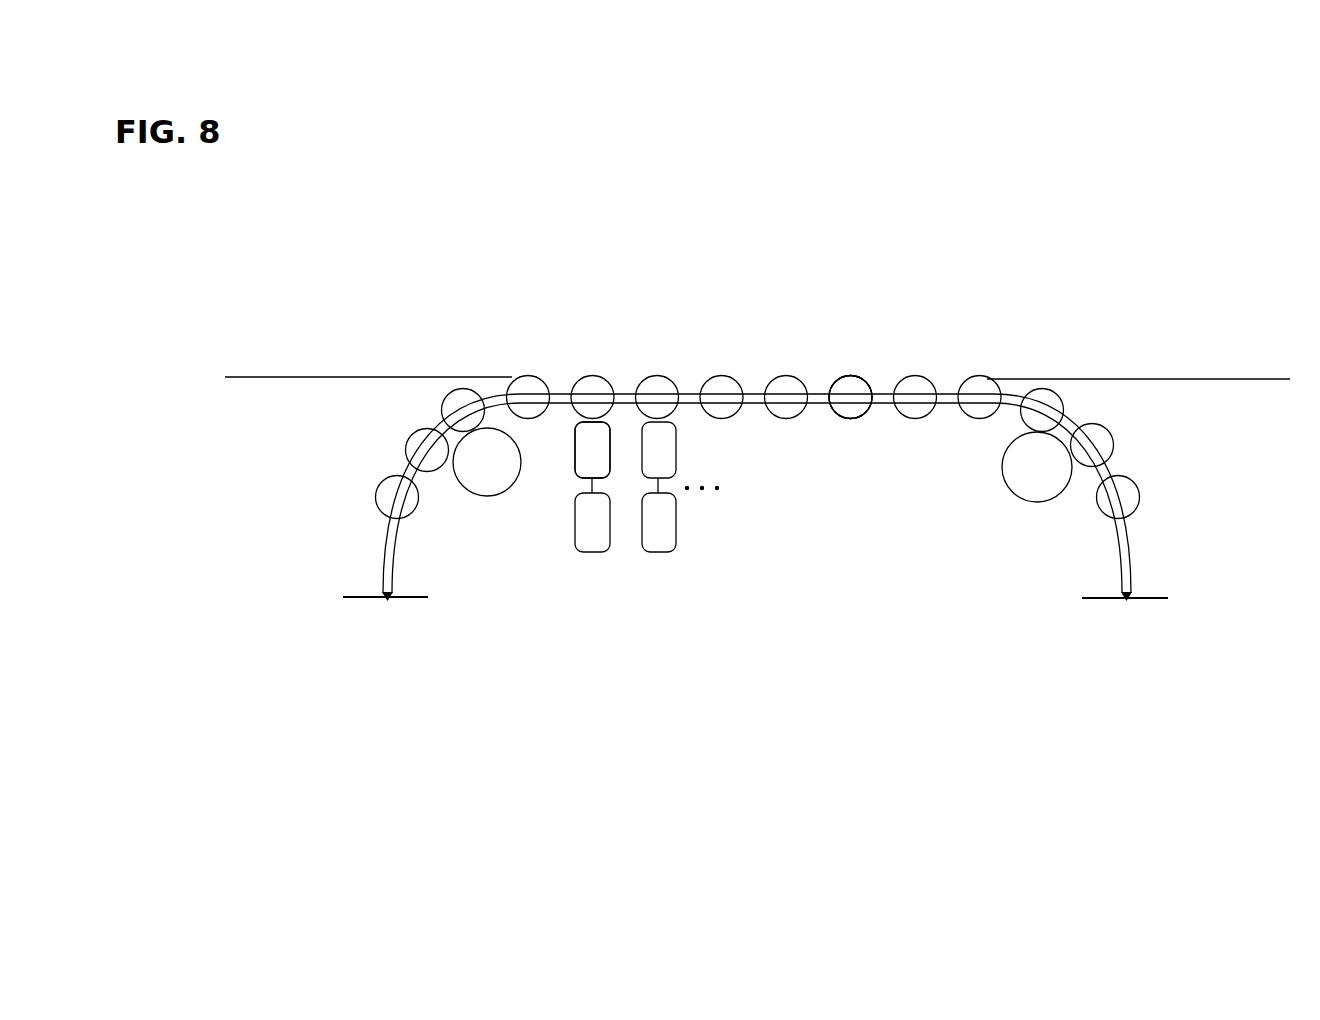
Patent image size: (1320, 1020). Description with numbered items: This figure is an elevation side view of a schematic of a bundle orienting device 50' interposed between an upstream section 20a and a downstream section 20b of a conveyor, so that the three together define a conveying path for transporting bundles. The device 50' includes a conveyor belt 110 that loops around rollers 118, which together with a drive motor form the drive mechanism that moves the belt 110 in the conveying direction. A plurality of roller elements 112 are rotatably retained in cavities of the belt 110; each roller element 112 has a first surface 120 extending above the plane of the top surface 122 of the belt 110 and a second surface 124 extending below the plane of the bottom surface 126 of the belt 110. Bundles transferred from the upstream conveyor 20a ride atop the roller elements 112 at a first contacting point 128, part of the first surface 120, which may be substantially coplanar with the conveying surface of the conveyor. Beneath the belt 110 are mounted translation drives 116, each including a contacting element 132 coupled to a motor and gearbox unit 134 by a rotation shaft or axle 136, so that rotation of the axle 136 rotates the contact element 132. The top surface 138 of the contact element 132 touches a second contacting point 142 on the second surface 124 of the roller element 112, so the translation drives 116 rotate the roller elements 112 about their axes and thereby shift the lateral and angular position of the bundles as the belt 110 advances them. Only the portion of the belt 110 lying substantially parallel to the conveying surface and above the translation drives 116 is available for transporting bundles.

The bundle orienting device 50' is at (757, 430).
The upstream section of the conveyor 20a is at (290, 377).
The downstream section of the conveyor 20b is at (1097, 379).
The conveyor belt 110 is at (559, 390).
The roller elements 112 is at (784, 388).
The first contacting point 128 is at (850, 383).
The first surface 120 is at (869, 381).
The second surface 124 is at (863, 420).
The top surface of the belt 122 is at (819, 395).
The bottom surface of the belt 126 is at (819, 403).
The rollers 118 is at (477, 482).
The translation drives 116 is at (665, 536).
The contacting element 132 is at (676, 450).
The motor and gearbox unit 134 is at (676, 528).
The rotation shaft or axle 136 is at (658, 485).
The top surface of the contact element 138 is at (577, 418).
The second contacting point 142 is at (580, 413).